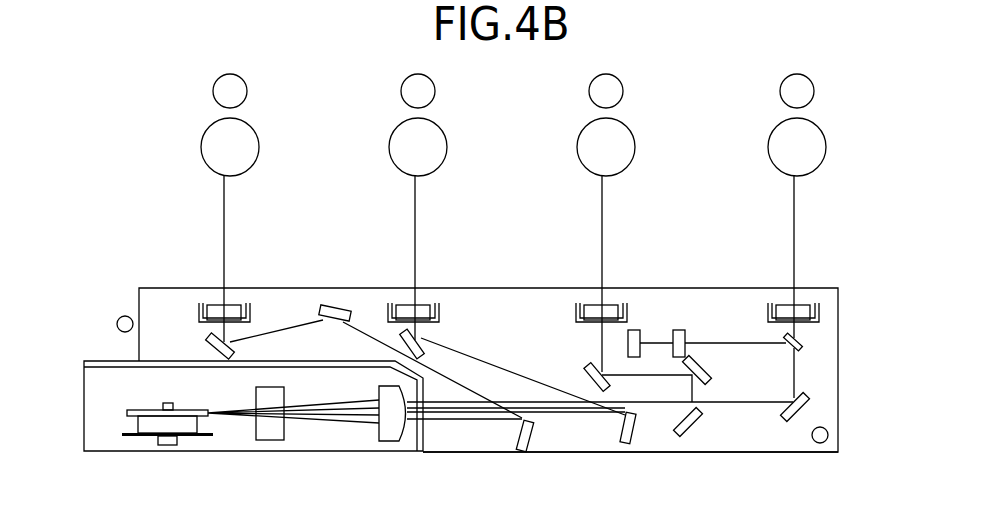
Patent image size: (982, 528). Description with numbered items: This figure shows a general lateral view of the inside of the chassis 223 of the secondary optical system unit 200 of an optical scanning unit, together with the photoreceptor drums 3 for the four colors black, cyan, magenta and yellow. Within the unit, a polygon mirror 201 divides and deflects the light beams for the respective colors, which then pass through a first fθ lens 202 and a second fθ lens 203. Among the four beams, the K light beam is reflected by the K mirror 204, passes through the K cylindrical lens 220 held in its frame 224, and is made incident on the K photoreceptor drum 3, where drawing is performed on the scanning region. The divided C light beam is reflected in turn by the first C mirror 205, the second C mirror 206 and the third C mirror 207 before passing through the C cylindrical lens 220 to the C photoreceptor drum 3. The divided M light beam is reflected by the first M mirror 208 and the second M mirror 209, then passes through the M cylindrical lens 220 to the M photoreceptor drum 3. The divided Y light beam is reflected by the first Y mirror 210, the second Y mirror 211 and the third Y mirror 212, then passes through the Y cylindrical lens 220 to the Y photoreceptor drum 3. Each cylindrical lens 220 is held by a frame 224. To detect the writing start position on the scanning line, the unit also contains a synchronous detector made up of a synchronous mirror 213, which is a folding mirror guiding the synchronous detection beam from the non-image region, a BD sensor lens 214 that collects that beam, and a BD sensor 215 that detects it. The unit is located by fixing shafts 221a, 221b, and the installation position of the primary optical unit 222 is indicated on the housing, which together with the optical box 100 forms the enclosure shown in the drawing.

The photoreceptor drum 3 is at (248, 143).
The optical box 100 is at (105, 452).
The secondary optical system unit 200 is at (850, 295).
The polygon mirror 201 is at (188, 436).
The first fθ lens 202 is at (270, 441).
The second fθ lens 203 is at (392, 442).
The K mirror 204 is at (812, 405).
The first C mirror 205 is at (700, 425).
The second C mirror 206 is at (710, 371).
The third C mirror 207 is at (588, 370).
The first M mirror 208 is at (636, 444).
The second M mirror 209 is at (425, 345).
The first Y mirror 210 is at (530, 447).
The second Y mirror 211 is at (336, 306).
The third Y mirror 212 is at (206, 343).
The synchronous mirror 213 is at (806, 343).
The BD sensor lens 214 is at (681, 329).
The BD sensor 215 is at (636, 329).
The cylindrical lens 220 is at (212, 305).
The fixing shaft 221a is at (117, 318).
The fixing shaft 221b is at (829, 436).
The installation position of the primary optical unit 222 is at (98, 361).
The chassis 223 is at (785, 453).
The frame holding the cylindrical lens 224 is at (255, 302).